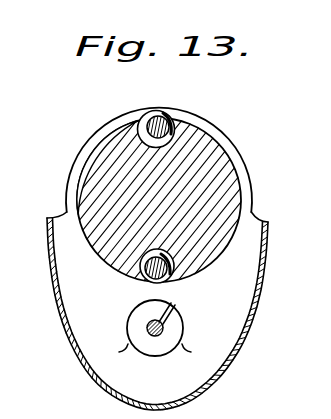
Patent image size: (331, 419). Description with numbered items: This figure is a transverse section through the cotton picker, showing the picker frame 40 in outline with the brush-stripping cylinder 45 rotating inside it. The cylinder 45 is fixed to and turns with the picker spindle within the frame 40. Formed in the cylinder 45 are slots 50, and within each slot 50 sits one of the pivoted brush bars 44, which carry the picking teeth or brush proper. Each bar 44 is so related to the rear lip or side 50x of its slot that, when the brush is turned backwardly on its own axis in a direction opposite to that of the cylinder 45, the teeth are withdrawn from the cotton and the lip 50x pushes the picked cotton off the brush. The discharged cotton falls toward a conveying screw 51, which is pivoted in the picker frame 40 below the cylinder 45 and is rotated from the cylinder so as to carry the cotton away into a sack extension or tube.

The picker frame 40 is at (248, 253).
The brush bar 44 is at (174, 124).
The brush-stripping cylinder 45 is at (232, 181).
The slot 50 is at (151, 111).
The rear lip of slot 50x is at (172, 114).
The conveying screw 51 is at (163, 328).